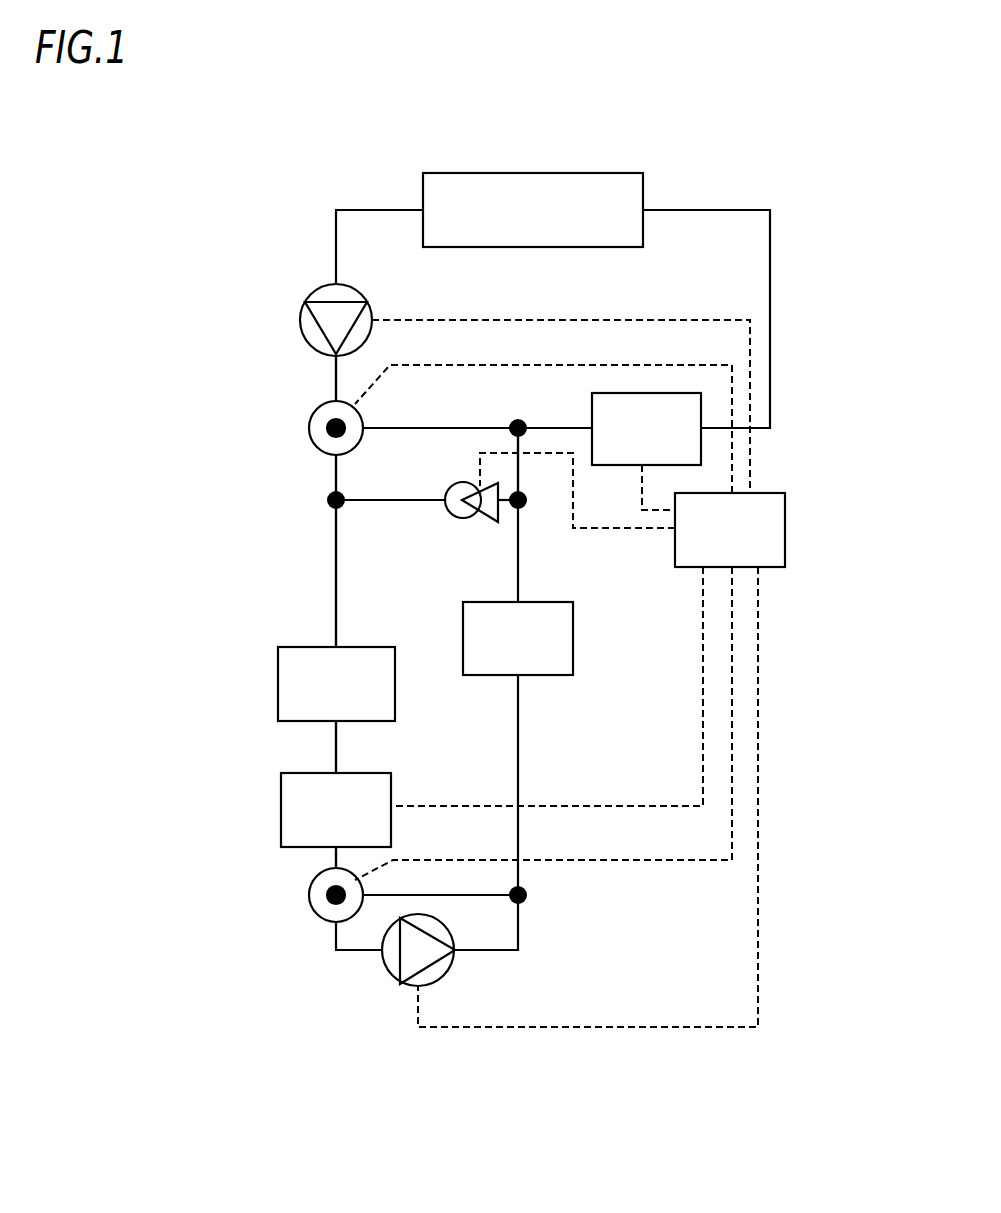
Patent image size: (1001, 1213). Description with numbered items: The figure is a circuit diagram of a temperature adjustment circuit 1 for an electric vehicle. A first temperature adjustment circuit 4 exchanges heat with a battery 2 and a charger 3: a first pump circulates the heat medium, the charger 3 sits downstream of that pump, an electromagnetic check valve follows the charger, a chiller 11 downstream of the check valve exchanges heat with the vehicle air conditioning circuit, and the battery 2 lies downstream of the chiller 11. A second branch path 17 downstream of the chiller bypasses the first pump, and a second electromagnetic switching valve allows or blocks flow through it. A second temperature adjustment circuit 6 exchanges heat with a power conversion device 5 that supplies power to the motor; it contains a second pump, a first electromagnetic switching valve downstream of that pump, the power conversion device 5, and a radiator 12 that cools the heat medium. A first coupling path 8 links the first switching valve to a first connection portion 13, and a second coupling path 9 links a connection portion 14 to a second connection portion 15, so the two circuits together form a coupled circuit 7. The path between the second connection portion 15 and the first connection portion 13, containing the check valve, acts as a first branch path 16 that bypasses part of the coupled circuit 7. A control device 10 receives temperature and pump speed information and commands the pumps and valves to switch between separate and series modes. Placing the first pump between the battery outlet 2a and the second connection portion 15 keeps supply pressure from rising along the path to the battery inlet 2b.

The temperature adjustment circuit 1 is at (735, 166).
The battery 2 is at (281, 805).
The outlet of the heat medium of the battery 2a is at (335, 847).
The inlet of the heat medium of the battery 2b is at (337, 772).
The charger 3 is at (573, 637).
The first temperature adjustment circuit 4 is at (335, 557).
The power conversion device 5 is at (625, 466).
The second temperature adjustment circuit 6 is at (335, 377).
The coupled circuit 7 is at (195, 400).
The first coupling path 8 is at (333, 468).
The second coupling path 9 is at (518, 470).
The control device 10 is at (785, 527).
The chiller 11 is at (278, 684).
The radiator 12 is at (577, 172).
The first connection portion 13 is at (328, 498).
The connection portion 14 is at (525, 422).
The second connection portion 15 is at (525, 505).
The first branch path 16 is at (404, 505).
The second branch path 17 is at (428, 893).